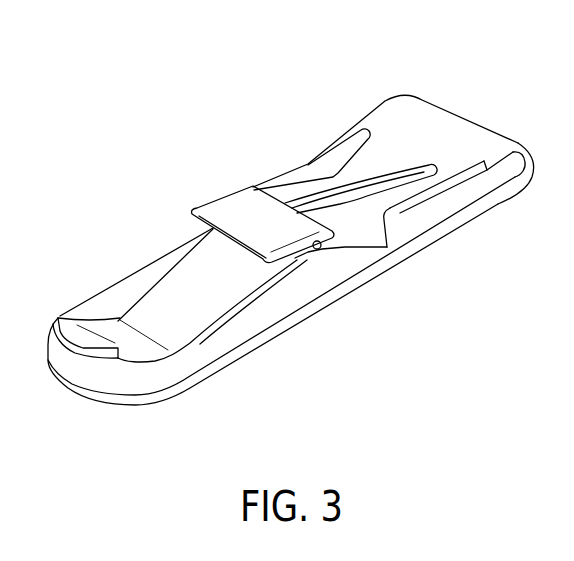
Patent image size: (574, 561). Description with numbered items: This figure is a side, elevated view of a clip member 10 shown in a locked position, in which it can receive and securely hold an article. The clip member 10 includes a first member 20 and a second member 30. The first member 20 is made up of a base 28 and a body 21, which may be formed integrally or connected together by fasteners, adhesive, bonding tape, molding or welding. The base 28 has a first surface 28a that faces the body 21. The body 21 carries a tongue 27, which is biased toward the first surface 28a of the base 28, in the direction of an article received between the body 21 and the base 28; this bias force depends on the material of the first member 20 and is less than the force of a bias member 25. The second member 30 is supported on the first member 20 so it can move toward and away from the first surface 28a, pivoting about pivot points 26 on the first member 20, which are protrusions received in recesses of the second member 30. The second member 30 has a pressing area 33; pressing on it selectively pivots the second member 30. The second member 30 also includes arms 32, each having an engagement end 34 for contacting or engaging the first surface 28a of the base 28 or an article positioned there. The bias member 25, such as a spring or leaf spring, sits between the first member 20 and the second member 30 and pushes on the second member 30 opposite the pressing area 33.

The clip member 10 is at (88, 58).
The first member 20 is at (443, 57).
The body 21 is at (452, 120).
The bias member 25 is at (327, 197).
The pivot points 26 is at (316, 250).
The tongue 27 is at (120, 320).
The base 28 is at (225, 365).
The first surface 28a is at (464, 205).
The second member 30 is at (174, 187).
The arms 32 is at (362, 250).
The pressing area 33 is at (227, 203).
The engagement end 34 is at (390, 252).